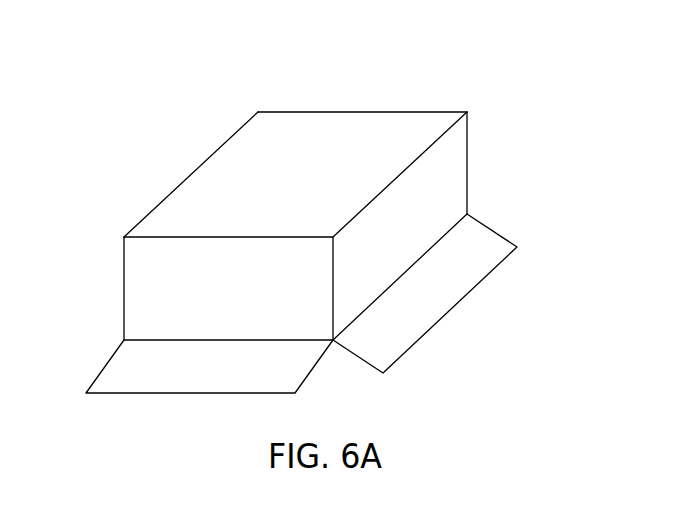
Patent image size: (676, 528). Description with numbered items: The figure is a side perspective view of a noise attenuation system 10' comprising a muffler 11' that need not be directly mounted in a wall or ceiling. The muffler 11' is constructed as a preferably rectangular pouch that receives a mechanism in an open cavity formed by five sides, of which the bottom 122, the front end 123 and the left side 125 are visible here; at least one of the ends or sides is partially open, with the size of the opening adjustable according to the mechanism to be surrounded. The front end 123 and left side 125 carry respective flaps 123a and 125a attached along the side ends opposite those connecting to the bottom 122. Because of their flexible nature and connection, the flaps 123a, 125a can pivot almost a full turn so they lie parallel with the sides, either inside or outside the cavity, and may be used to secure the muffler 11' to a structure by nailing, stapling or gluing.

The noise attenuation system 10' is at (362, 71).
The muffler 11' is at (503, 129).
The bottom 122 is at (228, 164).
The front end 123 is at (140, 290).
The flap 123a is at (203, 383).
The left side 125 is at (448, 190).
The flap 125a is at (465, 285).